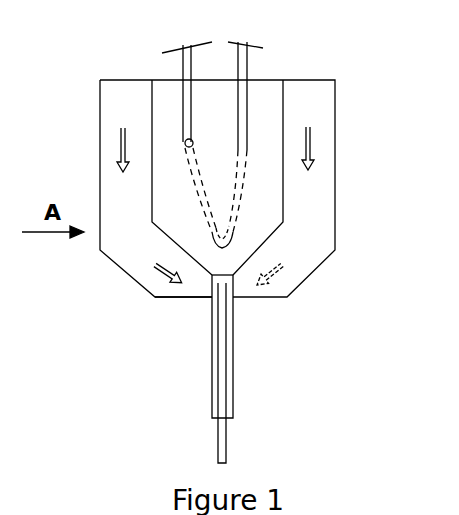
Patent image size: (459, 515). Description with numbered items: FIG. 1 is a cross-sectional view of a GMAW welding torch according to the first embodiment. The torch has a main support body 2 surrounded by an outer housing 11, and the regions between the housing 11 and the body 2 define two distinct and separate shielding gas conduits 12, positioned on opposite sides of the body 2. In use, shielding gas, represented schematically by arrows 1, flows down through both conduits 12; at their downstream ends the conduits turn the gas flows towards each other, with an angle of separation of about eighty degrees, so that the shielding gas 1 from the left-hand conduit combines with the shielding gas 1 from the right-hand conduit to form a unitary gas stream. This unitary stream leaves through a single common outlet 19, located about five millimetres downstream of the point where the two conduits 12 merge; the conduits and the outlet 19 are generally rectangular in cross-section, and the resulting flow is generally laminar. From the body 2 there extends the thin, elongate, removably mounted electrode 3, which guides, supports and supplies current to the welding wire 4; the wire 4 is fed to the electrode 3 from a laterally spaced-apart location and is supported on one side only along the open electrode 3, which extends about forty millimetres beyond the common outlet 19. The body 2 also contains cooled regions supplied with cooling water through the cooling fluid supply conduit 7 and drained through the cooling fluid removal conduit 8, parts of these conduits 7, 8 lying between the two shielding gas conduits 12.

The shielding gas flow 1 is at (216, 177).
The main support body 2 is at (216, 183).
The electrode 3 is at (232, 350).
The welding wire 4 is at (226, 440).
The cooling fluid supply conduit 7 is at (250, 70).
The cooling fluid removal conduit 8 is at (158, 48).
The outer housing 11 is at (110, 178).
The shielding gas conduits 12 is at (119, 128).
The common outlet 19 is at (192, 297).